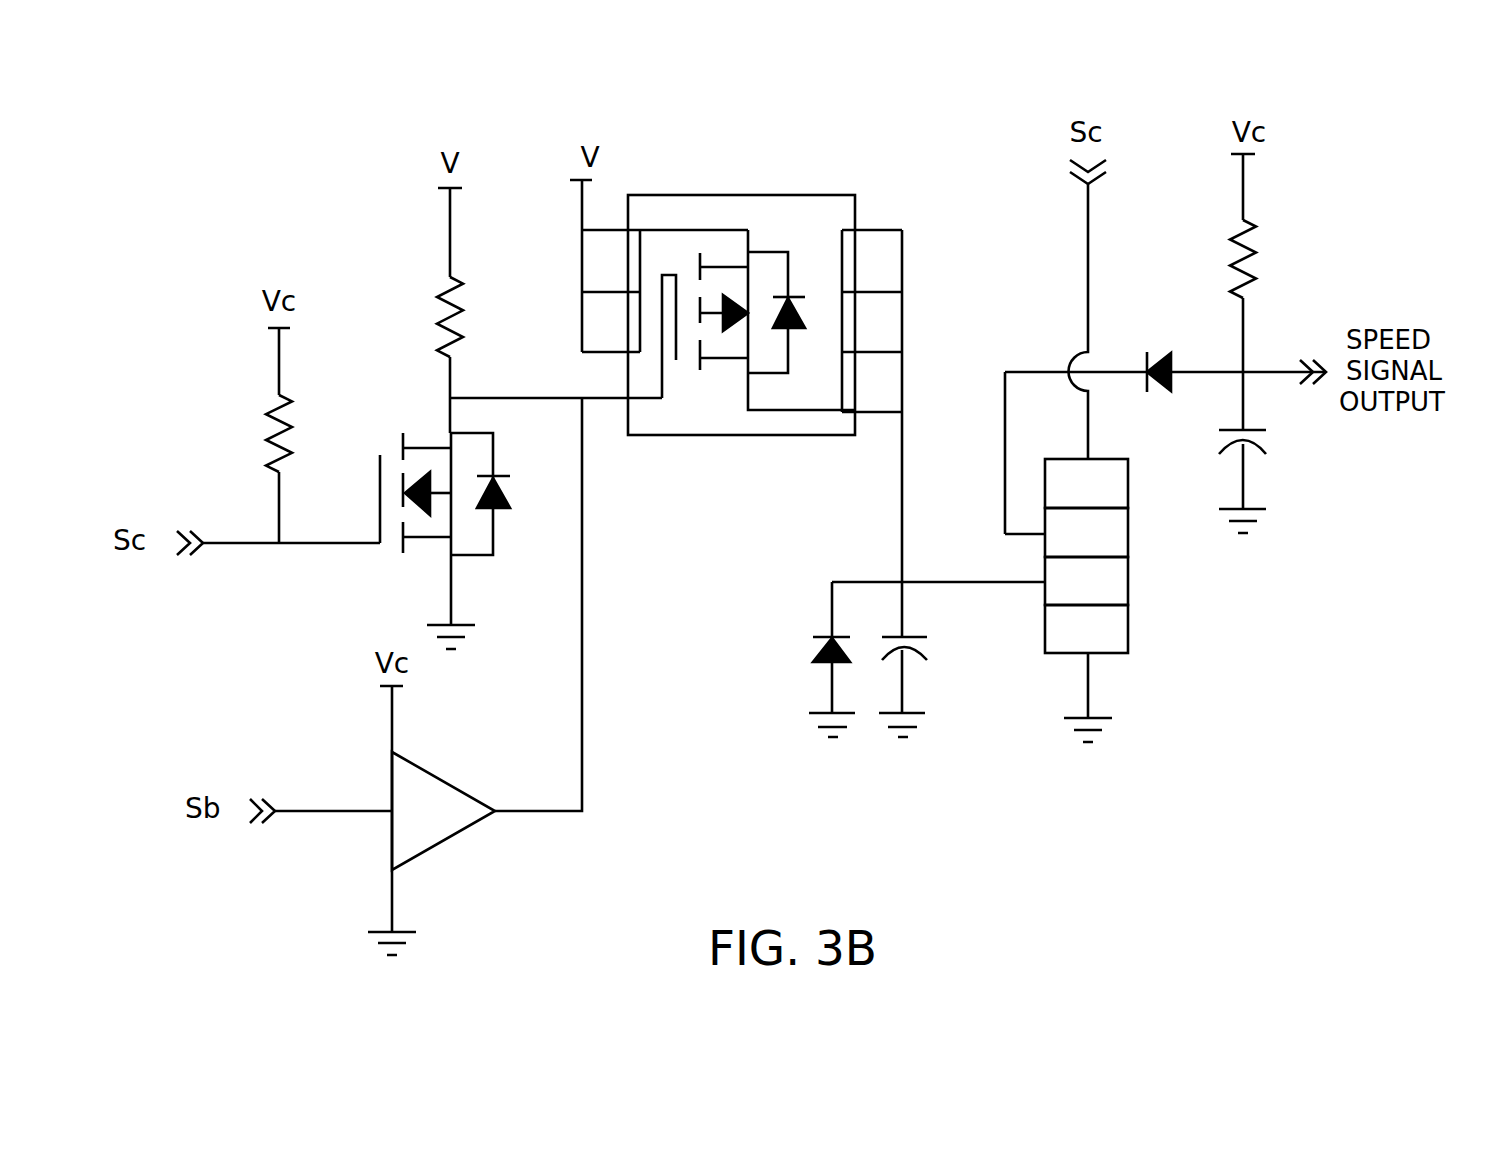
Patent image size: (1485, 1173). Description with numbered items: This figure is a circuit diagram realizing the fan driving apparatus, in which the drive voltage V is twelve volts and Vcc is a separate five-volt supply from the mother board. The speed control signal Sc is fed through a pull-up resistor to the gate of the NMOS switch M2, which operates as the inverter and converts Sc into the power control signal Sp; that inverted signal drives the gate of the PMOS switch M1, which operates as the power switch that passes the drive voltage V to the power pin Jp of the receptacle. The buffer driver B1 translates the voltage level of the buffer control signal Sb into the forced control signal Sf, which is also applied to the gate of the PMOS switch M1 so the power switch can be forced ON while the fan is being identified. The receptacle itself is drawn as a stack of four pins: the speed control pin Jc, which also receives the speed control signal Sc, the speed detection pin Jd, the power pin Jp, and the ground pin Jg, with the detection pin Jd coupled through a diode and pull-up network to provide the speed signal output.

The PMOS switch M1 is at (795, 183).
The NMOS switch M2 is at (417, 572).
The buffer driver B1 is at (477, 838).
The speed control pin Jc is at (1086, 483).
The speed detection pin Jd is at (1086, 532).
The power pin Jp is at (1086, 581).
The ground pin Jg is at (1086, 629).